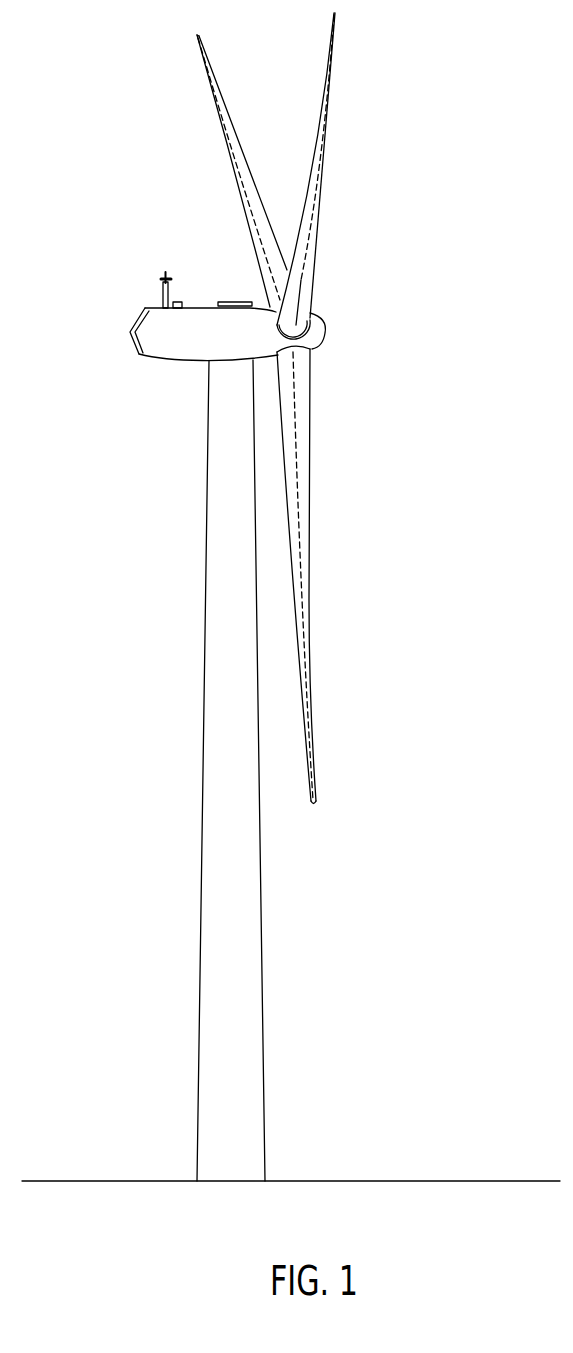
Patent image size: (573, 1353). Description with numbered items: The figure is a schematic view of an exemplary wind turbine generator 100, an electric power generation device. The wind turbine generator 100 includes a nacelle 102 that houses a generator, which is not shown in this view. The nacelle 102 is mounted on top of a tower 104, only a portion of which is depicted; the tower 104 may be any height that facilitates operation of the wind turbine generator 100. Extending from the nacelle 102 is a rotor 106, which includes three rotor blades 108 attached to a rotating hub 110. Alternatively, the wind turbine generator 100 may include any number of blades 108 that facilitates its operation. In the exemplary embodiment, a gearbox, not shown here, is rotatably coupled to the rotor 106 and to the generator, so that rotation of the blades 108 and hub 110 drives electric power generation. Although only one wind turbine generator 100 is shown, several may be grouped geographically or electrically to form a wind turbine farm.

The wind turbine generator 100 is at (133, 53).
The nacelle 102 is at (148, 358).
The tower 104 is at (263, 1048).
The rotor 106 is at (398, 185).
The rotor blades 108 is at (229, 141).
The rotating hub 110 is at (323, 340).